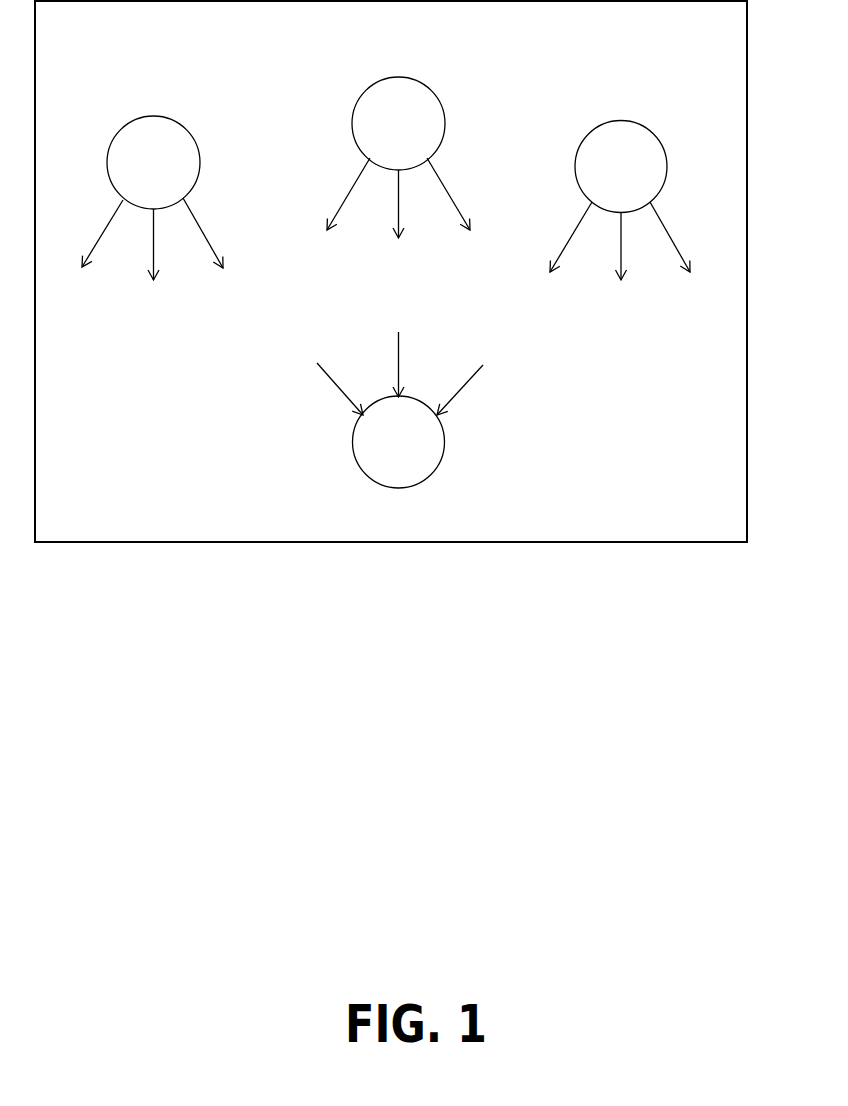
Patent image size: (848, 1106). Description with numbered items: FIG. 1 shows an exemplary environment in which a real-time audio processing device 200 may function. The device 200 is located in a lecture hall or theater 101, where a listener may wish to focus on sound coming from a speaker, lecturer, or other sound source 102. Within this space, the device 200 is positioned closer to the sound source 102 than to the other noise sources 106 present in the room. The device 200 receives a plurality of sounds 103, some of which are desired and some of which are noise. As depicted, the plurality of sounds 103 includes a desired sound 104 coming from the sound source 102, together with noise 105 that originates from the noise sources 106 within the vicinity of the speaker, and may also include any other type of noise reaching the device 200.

The lecture hall or theater 101 is at (391, 271).
The sound source 102 is at (398, 102).
The plurality of sounds 103 is at (400, 365).
The desired sound 104 is at (398, 213).
The noise 105 is at (386, 260).
The noise sources 106 is at (387, 141).
The real-time audio processing device 200 is at (369, 442).